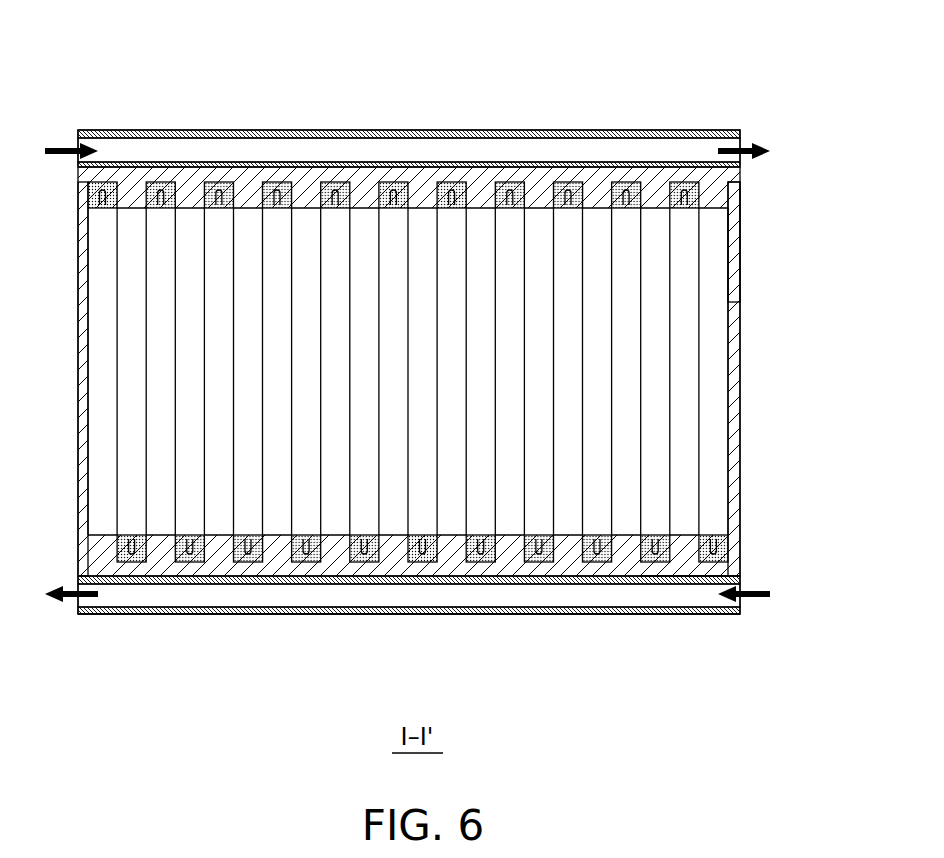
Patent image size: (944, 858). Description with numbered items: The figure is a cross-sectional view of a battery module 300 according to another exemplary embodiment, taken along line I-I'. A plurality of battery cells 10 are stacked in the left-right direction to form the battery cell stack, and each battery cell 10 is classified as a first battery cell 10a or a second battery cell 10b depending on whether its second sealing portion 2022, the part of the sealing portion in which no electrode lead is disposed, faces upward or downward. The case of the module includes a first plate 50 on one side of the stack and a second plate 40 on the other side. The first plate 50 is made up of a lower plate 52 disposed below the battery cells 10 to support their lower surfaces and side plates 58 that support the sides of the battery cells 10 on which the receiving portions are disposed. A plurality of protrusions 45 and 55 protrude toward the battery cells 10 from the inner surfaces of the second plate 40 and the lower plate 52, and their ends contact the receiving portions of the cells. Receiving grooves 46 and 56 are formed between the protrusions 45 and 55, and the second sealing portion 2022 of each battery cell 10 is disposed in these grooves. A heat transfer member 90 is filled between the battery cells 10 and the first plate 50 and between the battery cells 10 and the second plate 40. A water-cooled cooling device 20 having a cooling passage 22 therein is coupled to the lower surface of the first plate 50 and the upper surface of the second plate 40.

The battery module 300 is at (290, 22).
The cooling device 20 is at (148, 130).
The cooling passage 22 is at (318, 152).
The heat transfer member 90 is at (413, 183).
The second plate 40 is at (618, 170).
The protrusion 45 is at (188, 190).
The receiving groove 46 is at (512, 183).
The second sealing portion 2022 is at (733, 193).
The battery cell 10 is at (713, 425).
The first battery cell 10a is at (628, 280).
The second battery cell 10b is at (652, 375).
The receiving groove 56 is at (545, 560).
The protrusion 55 is at (627, 548).
The lower plate 52 is at (688, 572).
The side plate 58 is at (735, 482).
The first plate 50 is at (688, 662).